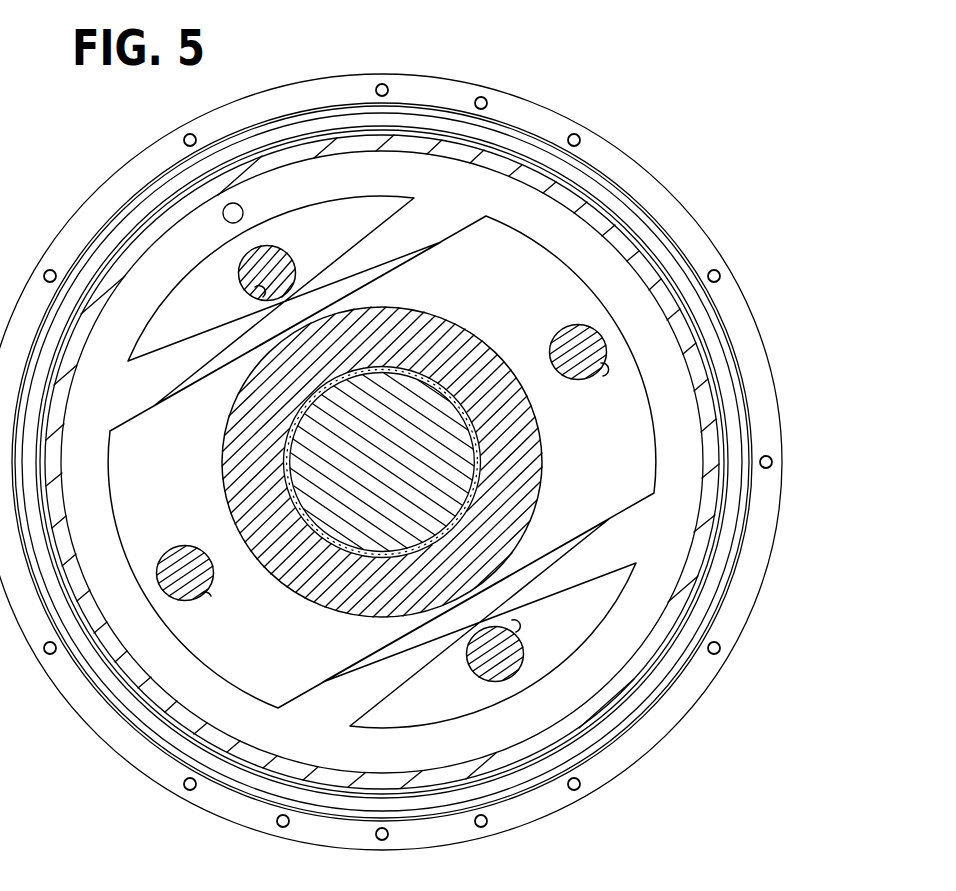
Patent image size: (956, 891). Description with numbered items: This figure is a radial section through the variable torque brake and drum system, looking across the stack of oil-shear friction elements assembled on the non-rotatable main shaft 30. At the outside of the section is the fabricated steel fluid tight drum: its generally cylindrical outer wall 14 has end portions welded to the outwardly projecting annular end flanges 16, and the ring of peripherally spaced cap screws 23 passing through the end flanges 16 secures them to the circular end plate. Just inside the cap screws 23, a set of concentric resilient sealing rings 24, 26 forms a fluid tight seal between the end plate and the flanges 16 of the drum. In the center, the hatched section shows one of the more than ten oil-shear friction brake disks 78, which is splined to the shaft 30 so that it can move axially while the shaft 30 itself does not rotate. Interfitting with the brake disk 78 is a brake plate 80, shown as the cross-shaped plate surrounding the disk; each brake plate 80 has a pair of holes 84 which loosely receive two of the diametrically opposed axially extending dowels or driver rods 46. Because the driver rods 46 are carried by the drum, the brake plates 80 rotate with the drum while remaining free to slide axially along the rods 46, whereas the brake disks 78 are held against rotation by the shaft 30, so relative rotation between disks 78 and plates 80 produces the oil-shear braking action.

The outer wall 14 is at (705, 397).
The end flanges 16 is at (695, 685).
The cap screws 23 is at (578, 135).
The resilient sealing ring 24 is at (722, 498).
The resilient sealing ring 26 is at (733, 565).
The main shaft 30 is at (397, 393).
The driver rods 46 is at (292, 271).
The oil-shear friction brake disk 78 is at (247, 382).
The brake plate 80 is at (622, 488).
The holes 84 is at (255, 287).